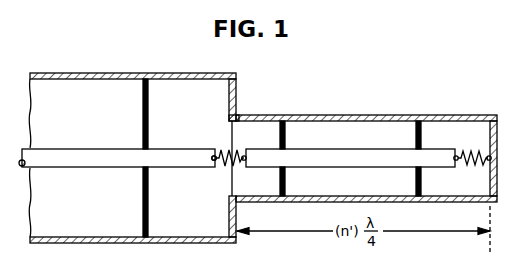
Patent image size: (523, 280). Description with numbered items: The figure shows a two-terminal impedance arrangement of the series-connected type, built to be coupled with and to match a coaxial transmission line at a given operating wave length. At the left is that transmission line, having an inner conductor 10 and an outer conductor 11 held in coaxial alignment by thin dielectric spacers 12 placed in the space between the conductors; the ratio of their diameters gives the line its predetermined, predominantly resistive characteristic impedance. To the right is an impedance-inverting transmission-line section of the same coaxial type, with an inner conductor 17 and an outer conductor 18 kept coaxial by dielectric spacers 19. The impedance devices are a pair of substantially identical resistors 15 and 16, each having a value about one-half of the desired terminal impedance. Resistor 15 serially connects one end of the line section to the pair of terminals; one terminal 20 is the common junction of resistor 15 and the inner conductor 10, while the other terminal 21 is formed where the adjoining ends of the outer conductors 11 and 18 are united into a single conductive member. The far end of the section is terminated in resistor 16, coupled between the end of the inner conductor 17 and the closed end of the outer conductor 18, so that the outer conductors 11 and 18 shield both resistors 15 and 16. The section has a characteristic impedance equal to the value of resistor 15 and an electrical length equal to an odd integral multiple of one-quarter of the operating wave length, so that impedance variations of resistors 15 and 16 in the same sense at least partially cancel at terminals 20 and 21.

The inner conductor 10 is at (111, 149).
The outer conductor 11 is at (160, 74).
The dielectric spacers 12 is at (149, 105).
The resistor 15 is at (238, 153).
The resistor 16 is at (481, 153).
The inner conductor 17 is at (362, 148).
The outer conductor 18 is at (424, 115).
The dielectric spacers 19 is at (286, 138).
The terminal 20 is at (227, 154).
The terminal 21 is at (236, 116).